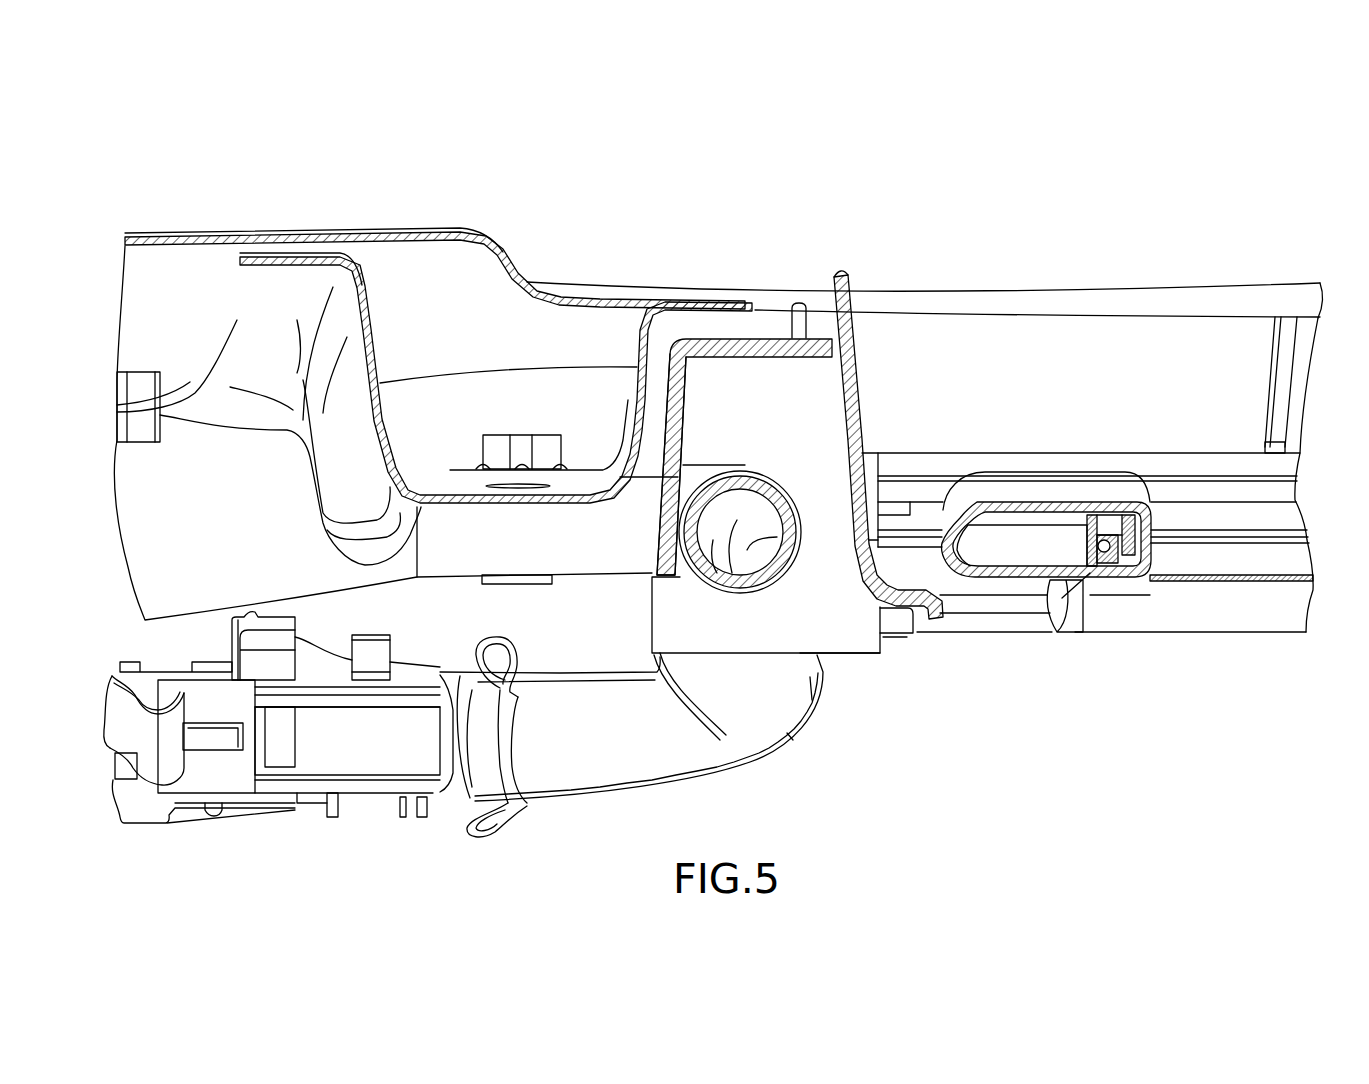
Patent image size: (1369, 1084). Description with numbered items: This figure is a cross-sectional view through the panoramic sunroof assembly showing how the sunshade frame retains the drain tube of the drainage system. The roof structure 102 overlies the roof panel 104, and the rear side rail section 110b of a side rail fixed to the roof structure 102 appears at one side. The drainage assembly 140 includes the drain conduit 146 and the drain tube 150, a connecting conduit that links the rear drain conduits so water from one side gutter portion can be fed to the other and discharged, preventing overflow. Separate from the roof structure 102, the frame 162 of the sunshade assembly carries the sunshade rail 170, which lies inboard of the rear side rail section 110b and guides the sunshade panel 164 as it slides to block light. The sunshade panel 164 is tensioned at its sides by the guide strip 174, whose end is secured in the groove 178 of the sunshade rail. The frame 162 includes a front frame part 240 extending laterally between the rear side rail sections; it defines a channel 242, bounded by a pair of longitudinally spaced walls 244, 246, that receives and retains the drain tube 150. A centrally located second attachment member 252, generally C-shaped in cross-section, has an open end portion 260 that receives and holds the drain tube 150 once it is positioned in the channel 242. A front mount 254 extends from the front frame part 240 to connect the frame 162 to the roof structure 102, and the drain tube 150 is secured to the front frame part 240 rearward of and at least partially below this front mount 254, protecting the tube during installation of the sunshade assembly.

The roof structure 102 is at (436, 208).
The roof panel 104 is at (300, 218).
The rear side rail section 110b is at (1248, 655).
The drainage assembly 140 is at (817, 775).
The drain conduit 146 is at (368, 802).
The drain tube 150 is at (800, 708).
The frame 162 is at (903, 335).
The sunshade panel 164 is at (1210, 560).
The sunshade rail 170 is at (1273, 518).
The guide strip 174 is at (1038, 488).
The groove 178 is at (1195, 514).
The front frame part 240 is at (767, 345).
The channel 242 is at (743, 471).
The wall 244 is at (686, 415).
The wall 246 is at (861, 440).
The second attachment member 252 is at (853, 630).
The front mount 254 is at (442, 487).
The open end portion 260 is at (668, 585).